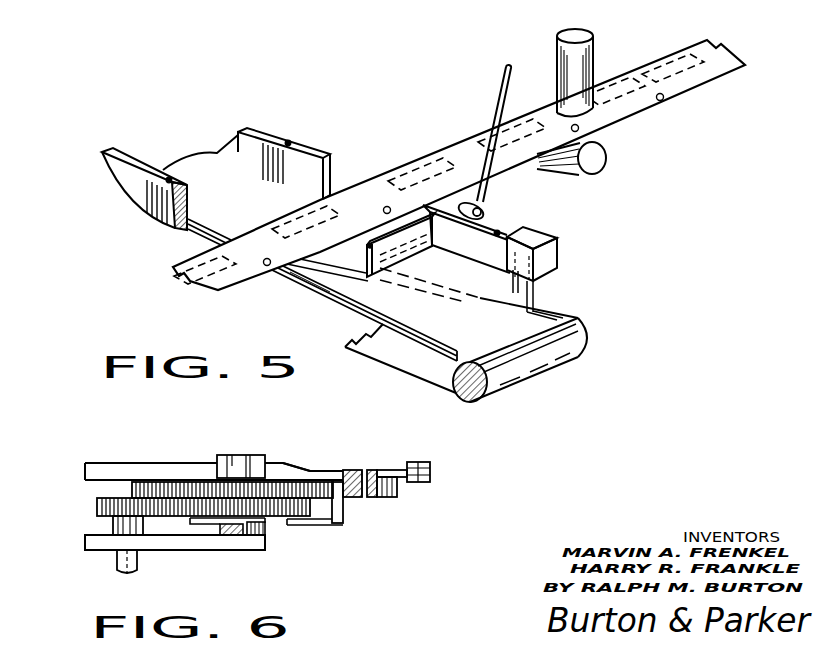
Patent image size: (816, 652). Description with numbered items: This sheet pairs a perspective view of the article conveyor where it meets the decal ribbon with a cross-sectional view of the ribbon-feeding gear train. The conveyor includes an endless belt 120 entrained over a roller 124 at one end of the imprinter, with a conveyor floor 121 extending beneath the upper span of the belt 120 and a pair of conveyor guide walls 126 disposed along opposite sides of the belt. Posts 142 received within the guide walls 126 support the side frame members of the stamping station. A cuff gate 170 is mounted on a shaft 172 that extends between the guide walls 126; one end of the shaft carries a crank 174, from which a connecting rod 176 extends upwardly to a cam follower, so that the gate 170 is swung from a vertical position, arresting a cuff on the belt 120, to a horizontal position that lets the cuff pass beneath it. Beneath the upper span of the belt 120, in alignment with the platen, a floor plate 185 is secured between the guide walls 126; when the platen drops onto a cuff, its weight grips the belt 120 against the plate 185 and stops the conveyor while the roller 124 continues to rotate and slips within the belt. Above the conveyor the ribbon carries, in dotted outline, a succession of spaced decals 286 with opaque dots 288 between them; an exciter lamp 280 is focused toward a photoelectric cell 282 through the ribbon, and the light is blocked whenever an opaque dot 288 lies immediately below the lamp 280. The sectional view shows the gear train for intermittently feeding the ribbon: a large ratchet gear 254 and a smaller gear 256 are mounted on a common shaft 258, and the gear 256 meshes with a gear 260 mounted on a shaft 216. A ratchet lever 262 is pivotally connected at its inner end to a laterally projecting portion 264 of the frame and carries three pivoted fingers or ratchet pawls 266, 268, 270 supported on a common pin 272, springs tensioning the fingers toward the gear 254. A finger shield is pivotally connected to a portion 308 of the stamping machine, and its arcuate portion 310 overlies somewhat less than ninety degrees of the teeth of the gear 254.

In FIG. 5, the endless belt 120 is at (424, 367).
In FIG. 5, the conveyor floor 121 is at (197, 233).
In FIG. 5, the roller 124 is at (470, 402).
In FIG. 5, the conveyor guide walls 126 is at (115, 170).
In FIG. 5, the posts 142 is at (175, 180).
In FIG. 5, the cuff gate 170 is at (367, 262).
In FIG. 5, the shaft 172 is at (392, 244).
In FIG. 5, the crank 174 is at (488, 202).
In FIG. 5, the connecting rod 176 is at (500, 105).
In FIG. 5, the floor plate 185 is at (332, 297).
In FIG. 5, the exciter lamp 280 is at (590, 68).
In FIG. 5, the photoelectric cell 282 is at (595, 160).
In FIG. 5, the decals 286 is at (410, 176).
In FIG. 5, the opaque dots 288 is at (663, 101).
In FIG. 6, the shaft 216 is at (139, 561).
In FIG. 6, the large ratchet gear 254 is at (148, 485).
In FIG. 6, the smaller gear 256 is at (298, 527).
In FIG. 6, the common shaft 258 is at (226, 453).
In FIG. 6, the gear 260 is at (97, 507).
In FIG. 6, the ratchet lever 262 is at (323, 470).
In FIG. 6, the laterally projecting portion 264 is at (85, 470).
In FIG. 6, the ratchet pawl 266 is at (386, 496).
In FIG. 6, the ratchet pawl 268 is at (349, 492).
In FIG. 6, the ratchet pawl 270 is at (373, 497).
In FIG. 6, the common pin 272 is at (362, 470).
In FIG. 6, the portion of the stamping machine 308 is at (102, 541).
In FIG. 6, the shield portion 310 is at (338, 508).